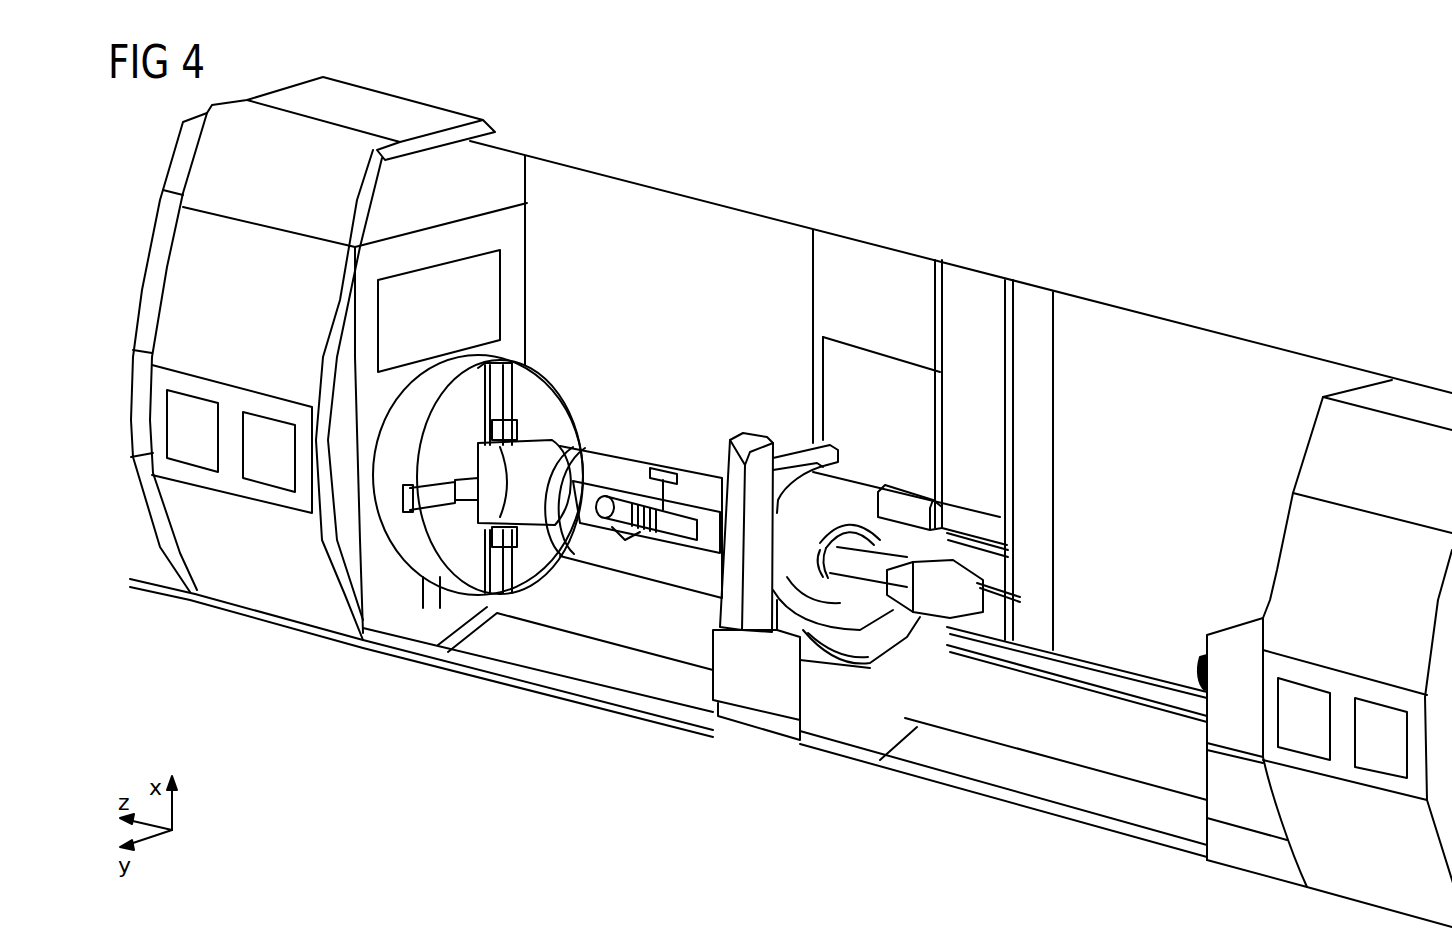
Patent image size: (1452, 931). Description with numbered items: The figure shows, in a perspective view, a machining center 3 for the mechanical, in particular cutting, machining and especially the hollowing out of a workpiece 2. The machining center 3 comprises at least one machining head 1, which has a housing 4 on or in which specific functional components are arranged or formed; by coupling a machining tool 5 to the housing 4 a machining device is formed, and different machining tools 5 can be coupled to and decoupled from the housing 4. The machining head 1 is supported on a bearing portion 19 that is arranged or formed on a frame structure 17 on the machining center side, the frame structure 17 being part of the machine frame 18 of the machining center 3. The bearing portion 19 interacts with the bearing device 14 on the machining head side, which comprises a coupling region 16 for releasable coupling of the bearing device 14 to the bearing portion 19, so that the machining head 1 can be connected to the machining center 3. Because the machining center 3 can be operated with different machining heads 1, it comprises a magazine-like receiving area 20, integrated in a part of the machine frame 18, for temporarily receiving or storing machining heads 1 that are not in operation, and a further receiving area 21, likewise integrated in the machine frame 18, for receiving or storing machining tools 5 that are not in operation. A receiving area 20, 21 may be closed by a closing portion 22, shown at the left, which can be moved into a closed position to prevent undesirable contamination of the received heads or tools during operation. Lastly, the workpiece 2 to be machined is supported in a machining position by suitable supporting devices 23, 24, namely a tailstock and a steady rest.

The machining head 1 is at (875, 677).
The workpiece 2 is at (578, 590).
The machining center 3 is at (858, 199).
The housing 4 is at (942, 593).
The machining tool 5 is at (637, 495).
The bearing device 14 is at (875, 478).
The coupling region 16 is at (908, 510).
The frame structure 17 is at (1032, 450).
The machine frame 18 is at (1032, 450).
The bearing portion 19 is at (982, 560).
The receiving area 20 is at (473, 285).
The further receiving area 21 is at (1333, 440).
The closing portion 22 is at (395, 302).
The supporting device 23 is at (832, 727).
The supporting device 24 is at (447, 560).